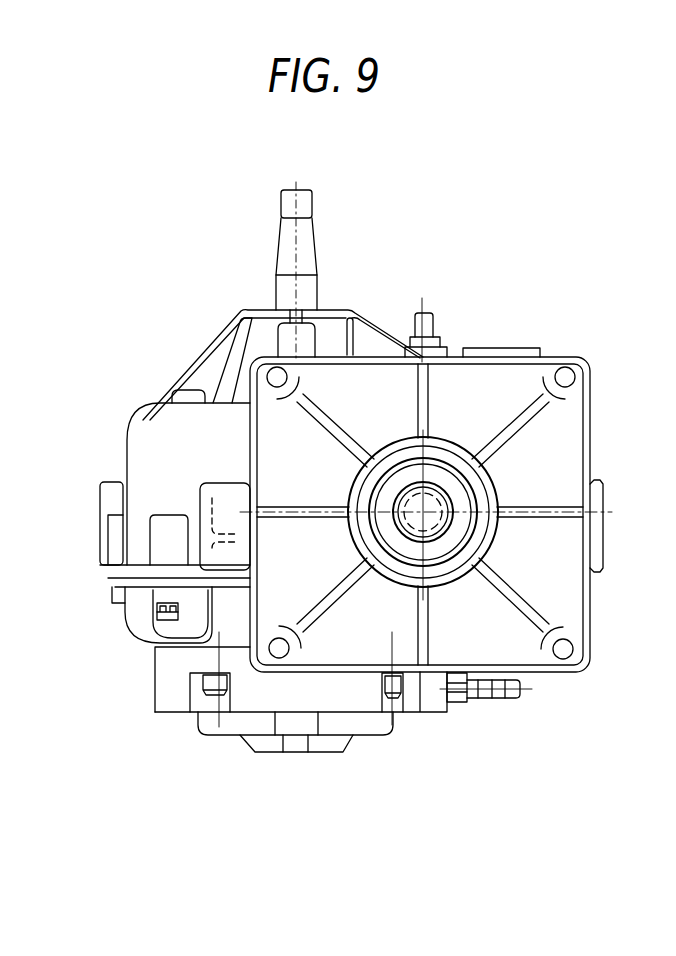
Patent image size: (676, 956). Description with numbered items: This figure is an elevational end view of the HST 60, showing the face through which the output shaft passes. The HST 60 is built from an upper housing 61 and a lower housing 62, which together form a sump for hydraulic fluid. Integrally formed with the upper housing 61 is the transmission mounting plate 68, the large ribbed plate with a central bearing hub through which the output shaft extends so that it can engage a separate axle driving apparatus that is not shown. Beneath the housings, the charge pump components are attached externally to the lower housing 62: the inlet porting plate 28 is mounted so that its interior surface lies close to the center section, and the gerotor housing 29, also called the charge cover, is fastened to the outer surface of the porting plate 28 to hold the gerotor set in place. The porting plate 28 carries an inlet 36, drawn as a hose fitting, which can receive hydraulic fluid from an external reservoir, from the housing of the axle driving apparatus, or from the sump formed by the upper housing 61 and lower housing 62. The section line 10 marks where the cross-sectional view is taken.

The section line 10- 10 is at (296, 182).
The HST 60 is at (165, 288).
The upper housing 61 is at (165, 447).
The lower housing 62 is at (145, 623).
The transmission mounting plate 68 is at (483, 409).
The inlet porting plate 28 is at (350, 697).
The gerotor housing 29 is at (255, 752).
The inlet 36 is at (497, 699).